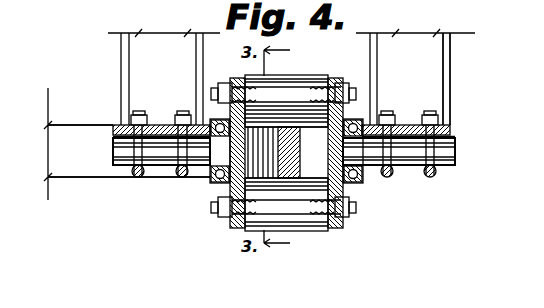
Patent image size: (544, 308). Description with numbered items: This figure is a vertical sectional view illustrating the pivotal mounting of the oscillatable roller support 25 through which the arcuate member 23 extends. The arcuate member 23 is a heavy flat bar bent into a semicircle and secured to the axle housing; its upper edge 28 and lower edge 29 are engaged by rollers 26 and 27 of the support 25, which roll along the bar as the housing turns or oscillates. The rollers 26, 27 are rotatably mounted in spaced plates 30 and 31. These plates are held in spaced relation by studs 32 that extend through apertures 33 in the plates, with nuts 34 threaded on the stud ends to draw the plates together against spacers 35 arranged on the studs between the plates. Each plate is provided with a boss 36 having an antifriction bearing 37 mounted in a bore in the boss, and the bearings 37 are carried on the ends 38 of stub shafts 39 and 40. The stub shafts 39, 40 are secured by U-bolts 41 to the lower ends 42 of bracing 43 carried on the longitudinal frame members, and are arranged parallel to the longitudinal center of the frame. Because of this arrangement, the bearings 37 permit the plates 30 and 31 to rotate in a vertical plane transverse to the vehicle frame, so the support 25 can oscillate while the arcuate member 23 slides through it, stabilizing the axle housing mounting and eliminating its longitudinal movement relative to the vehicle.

The arcuate member 23 is at (84, 101).
The support structure 25 is at (358, 80).
The roller 26 is at (312, 76).
The roller 27 is at (316, 233).
The upper edge 28 is at (95, 125).
The lower edge 29 is at (62, 178).
The plate 30 is at (232, 84).
The plate 31 is at (344, 106).
The stud 32 is at (343, 199).
The aperture 33 is at (342, 223).
The nut 34 is at (356, 214).
The spacer 35 is at (228, 227).
The boss 36 is at (228, 110).
The antifriction bearing 37 is at (222, 112).
The end of stub shaft 38 is at (212, 166).
The stub shaft 39 is at (162, 168).
The stub shaft 40 is at (454, 137).
The U-bolt 41 is at (433, 175).
The lower end of bracing 42 is at (452, 127).
The bracing 43 is at (447, 77).